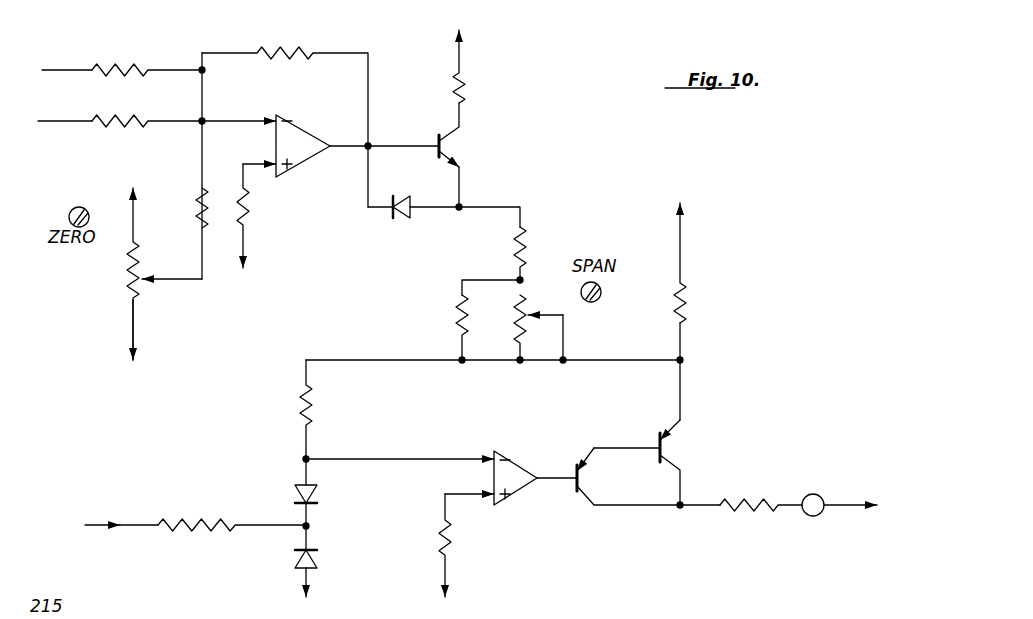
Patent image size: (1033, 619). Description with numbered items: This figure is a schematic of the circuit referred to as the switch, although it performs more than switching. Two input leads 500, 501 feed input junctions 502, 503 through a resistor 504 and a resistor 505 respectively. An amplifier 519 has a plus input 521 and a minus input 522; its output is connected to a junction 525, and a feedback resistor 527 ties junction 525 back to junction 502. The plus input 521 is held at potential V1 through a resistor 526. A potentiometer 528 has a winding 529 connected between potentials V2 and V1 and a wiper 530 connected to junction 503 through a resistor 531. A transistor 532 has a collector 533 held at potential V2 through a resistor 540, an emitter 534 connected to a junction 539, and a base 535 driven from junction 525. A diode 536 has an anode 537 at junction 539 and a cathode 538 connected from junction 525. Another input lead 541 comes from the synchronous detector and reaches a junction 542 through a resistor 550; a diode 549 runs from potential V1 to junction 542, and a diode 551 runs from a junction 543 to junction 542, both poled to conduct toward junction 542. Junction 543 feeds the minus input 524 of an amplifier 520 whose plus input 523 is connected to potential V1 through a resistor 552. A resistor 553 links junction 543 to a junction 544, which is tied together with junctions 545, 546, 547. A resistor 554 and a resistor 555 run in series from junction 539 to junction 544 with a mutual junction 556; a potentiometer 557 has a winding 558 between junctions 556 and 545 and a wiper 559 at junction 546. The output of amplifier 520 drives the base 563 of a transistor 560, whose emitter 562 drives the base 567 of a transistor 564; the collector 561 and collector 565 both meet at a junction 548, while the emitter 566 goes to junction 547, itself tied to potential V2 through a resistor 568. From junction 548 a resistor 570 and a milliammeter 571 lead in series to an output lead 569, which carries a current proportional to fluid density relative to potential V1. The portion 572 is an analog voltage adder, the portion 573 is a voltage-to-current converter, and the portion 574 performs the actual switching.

The input lead 500 is at (88, 56).
The input lead 501 is at (84, 107).
The input junction 502 is at (205, 70).
The input junction 503 is at (204, 119).
The resistor 504 is at (126, 66).
The resistor 505 is at (126, 116).
The amplifier 519 is at (310, 158).
The amplifier 520 is at (500, 506).
The plus input 521 is at (261, 162).
The minus input 522 is at (249, 120).
The plus input 523 is at (444, 492).
The minus input 524 is at (400, 458).
The junction 525 is at (366, 144).
The resistor 526 is at (250, 200).
The feedback resistor 527 is at (280, 52).
The potentiometer 528 is at (150, 294).
The winding 529 is at (130, 286).
The wiper 530 is at (186, 278).
The resistor 531 is at (200, 210).
The transistor 532 is at (470, 146).
The collector 533 is at (453, 128).
The emitter 534 is at (468, 154).
The base 535 is at (382, 146).
The diode 536 is at (402, 222).
The anode 537 is at (397, 200).
The cathode 538 is at (390, 208).
The junction 539 is at (472, 206).
The resistor 540 is at (465, 89).
The input lead 541 is at (138, 525).
The junction 542 is at (308, 527).
The junction 543 is at (308, 459).
The junction 544 is at (458, 364).
The junction 545 is at (522, 364).
The junction 546 is at (565, 364).
The junction 547 is at (683, 360).
The junction 548 is at (680, 507).
The diode 549 is at (292, 560).
The resistor 550 is at (208, 524).
The diode 551 is at (294, 494).
The resistor 552 is at (442, 548).
The resistor 553 is at (306, 396).
The resistor 554 is at (526, 240).
The resistor 555 is at (458, 330).
The junction 556 is at (517, 280).
The potentiometer 557 is at (568, 326).
The winding 558 is at (525, 308).
The wiper 559 is at (548, 314).
The transistor 560 is at (566, 456).
The collector 561 is at (588, 492).
The emitter 562 is at (590, 466).
The base 563 is at (556, 480).
The transistor 564 is at (692, 451).
The collector 565 is at (676, 462).
The emitter 566 is at (678, 424).
The base 567 is at (638, 448).
The resistor 568 is at (685, 304).
The output lead 569 is at (834, 507).
The resistor 570 is at (748, 508).
The milliammeter 571 is at (819, 478).
The analog voltage adder 572 is at (378, 44).
The voltage-to-current converter 573 is at (556, 572).
The switching portion 574 is at (236, 532).